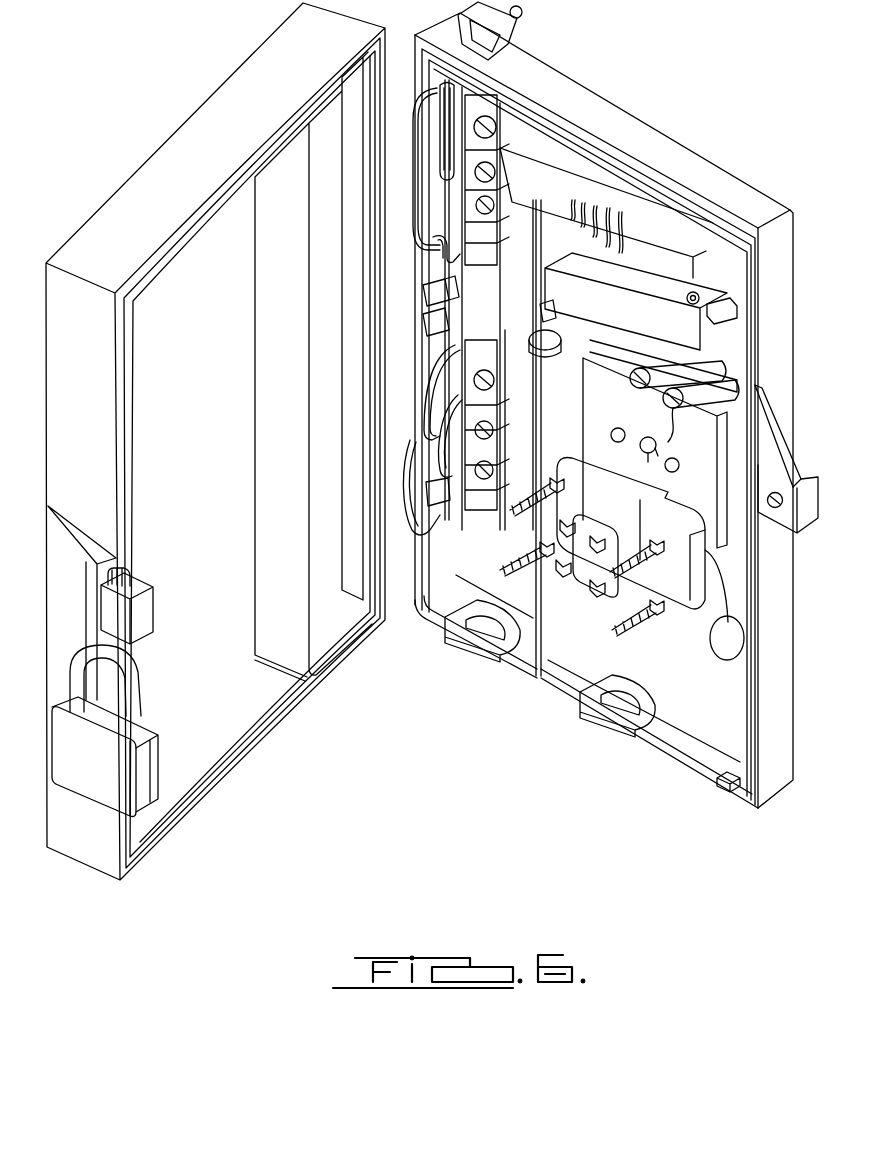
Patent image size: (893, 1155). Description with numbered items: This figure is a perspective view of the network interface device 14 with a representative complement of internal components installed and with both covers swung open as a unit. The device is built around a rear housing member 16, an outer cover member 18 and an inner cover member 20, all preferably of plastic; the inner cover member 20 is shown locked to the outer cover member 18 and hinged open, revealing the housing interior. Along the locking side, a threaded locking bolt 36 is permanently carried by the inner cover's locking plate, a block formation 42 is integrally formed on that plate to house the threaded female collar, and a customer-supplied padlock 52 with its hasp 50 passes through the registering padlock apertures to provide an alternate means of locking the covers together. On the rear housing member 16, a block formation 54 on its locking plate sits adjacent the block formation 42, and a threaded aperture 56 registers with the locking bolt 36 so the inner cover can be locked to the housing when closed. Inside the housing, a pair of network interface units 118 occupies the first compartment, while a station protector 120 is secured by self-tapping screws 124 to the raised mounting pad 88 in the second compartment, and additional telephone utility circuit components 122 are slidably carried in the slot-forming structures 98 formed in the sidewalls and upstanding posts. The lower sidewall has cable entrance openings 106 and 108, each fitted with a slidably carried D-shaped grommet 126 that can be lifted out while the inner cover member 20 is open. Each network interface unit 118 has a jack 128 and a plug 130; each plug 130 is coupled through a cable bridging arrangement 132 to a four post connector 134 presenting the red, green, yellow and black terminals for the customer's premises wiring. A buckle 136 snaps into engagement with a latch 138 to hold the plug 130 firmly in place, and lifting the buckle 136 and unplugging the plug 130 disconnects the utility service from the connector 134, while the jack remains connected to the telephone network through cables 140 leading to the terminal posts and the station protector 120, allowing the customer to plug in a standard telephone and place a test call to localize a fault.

The network interface device 14 is at (653, 104).
The rear housing member 16 is at (677, 147).
The outer cover member 18 is at (122, 200).
The inner cover member 20 is at (227, 743).
The threaded locking bolt 36 is at (136, 575).
The block formation 42 is at (145, 602).
The padlock shackle 50 is at (130, 668).
The padlock 52 is at (110, 794).
The block formation 54 is at (807, 522).
The threaded aperture 56 is at (775, 496).
The mounting pad 88 is at (712, 467).
The slot-forming structures 98 is at (550, 302).
The cable entrance opening 106 is at (620, 752).
The cable entrance opening 108 is at (480, 670).
The network interface units 118 is at (508, 173).
The station protector 120 is at (656, 628).
The telephone utility circuit components 122 is at (697, 225).
The self-tapping screws 124 is at (713, 657).
The grommets 126 is at (458, 638).
The jacks 128 is at (455, 397).
The plugs 130 is at (425, 378).
The cable bridging arrangement 132 is at (403, 456).
The four post connector 134 is at (513, 452).
The buckle 136 is at (458, 97).
The latch 138 is at (432, 238).
The cables 140 is at (552, 357).